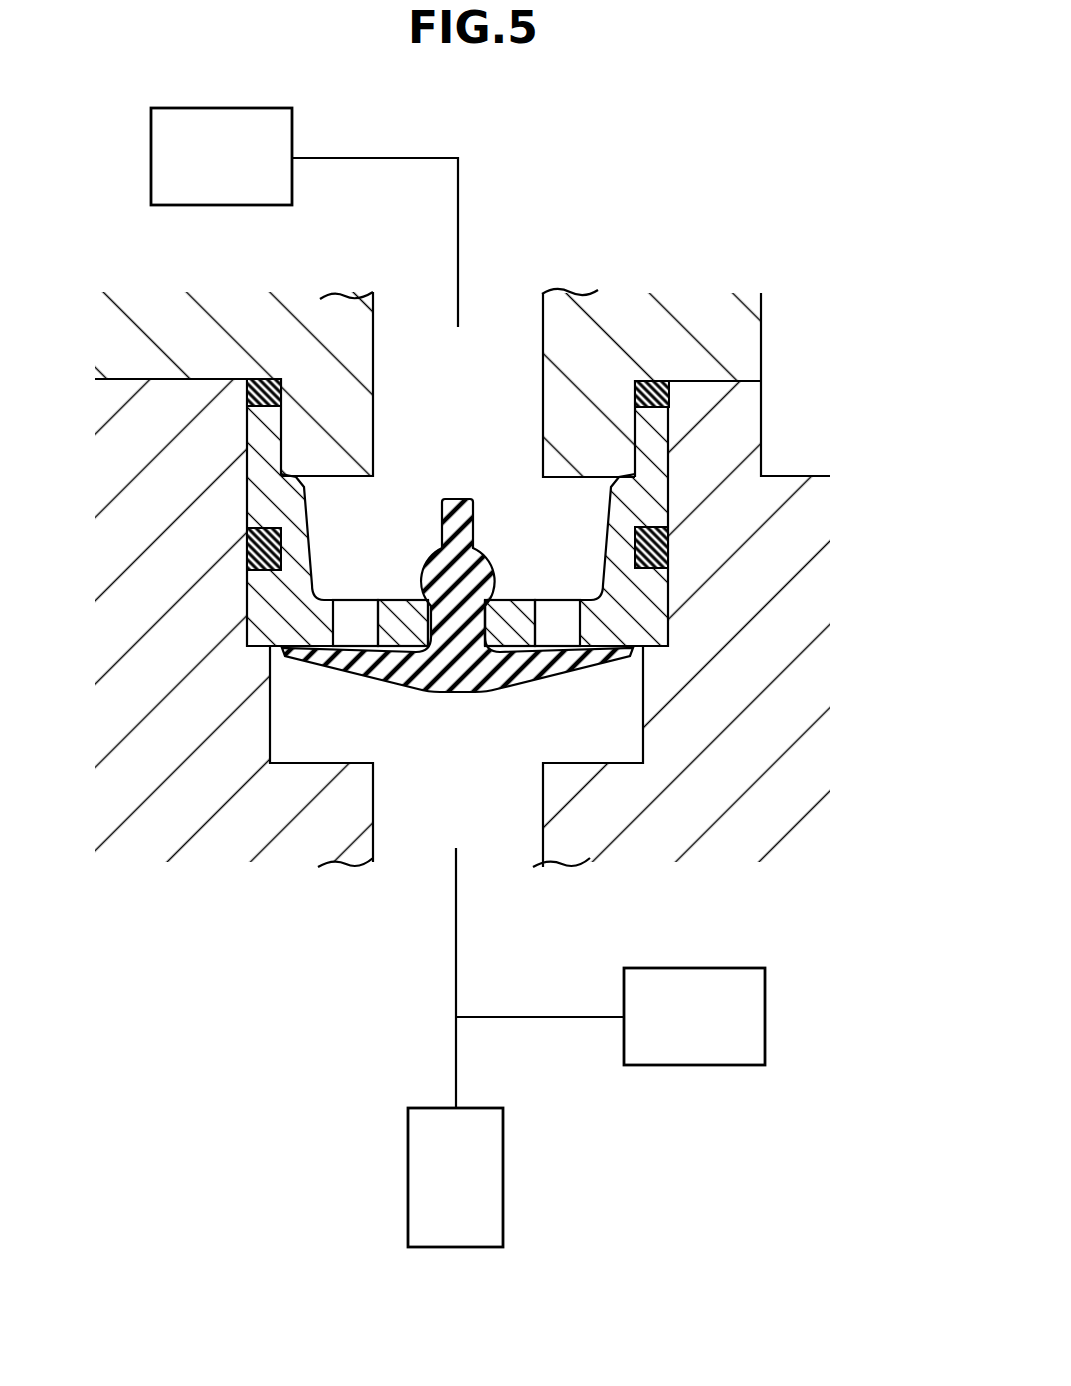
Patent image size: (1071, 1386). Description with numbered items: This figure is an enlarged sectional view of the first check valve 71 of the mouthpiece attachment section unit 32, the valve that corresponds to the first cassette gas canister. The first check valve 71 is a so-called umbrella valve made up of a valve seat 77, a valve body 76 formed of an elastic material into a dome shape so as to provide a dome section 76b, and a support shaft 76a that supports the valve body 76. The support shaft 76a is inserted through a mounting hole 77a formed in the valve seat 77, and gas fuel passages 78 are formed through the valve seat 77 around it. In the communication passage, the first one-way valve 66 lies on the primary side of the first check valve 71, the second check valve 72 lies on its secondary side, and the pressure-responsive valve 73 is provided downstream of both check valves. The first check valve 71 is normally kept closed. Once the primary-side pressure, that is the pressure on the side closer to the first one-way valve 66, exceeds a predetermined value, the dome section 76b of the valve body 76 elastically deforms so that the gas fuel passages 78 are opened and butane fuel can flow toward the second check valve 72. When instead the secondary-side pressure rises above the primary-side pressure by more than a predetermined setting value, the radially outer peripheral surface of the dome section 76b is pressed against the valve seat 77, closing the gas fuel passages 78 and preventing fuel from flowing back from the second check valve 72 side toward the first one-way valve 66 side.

The mouthpiece attachment section unit 32 is at (648, 185).
The first one-way valve 66 is at (217, 122).
The first check valve 71 is at (410, 710).
The second check valve 72 is at (415, 1181).
The pressure-responsive valve 73 is at (692, 1055).
The valve body 76 is at (472, 603).
The support shaft 76a is at (472, 537).
The dome section 76b is at (603, 658).
The valve seat 77 is at (535, 526).
The mounting hole 77a is at (455, 603).
The gas fuel passages 78 is at (337, 617).